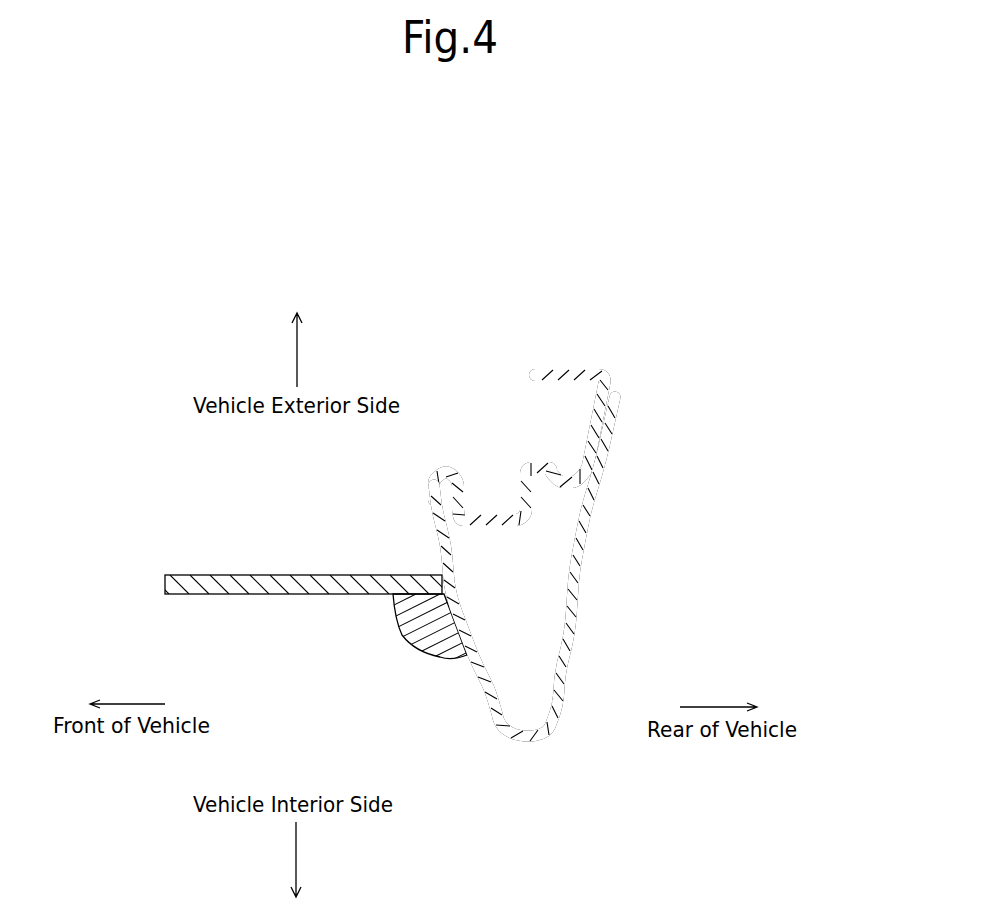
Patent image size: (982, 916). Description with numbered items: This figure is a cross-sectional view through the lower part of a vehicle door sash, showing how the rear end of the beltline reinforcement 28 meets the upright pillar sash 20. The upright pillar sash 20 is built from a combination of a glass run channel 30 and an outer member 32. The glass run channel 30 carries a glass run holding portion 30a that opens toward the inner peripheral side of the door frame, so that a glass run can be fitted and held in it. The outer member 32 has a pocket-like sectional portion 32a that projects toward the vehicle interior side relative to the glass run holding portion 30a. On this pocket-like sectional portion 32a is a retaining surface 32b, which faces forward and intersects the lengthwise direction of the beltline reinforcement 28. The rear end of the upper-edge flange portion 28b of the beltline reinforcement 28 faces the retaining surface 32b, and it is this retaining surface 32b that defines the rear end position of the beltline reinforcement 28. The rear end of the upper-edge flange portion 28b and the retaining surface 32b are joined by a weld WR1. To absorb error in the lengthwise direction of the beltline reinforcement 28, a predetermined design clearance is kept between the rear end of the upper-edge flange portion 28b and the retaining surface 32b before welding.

The upright pillar sash 20 is at (561, 516).
The beltline reinforcement 28 is at (299, 571).
The upper-edge flange portion 28b is at (232, 595).
The glass run channel 30 is at (518, 392).
The glass run holding portion 30a is at (543, 418).
The outer member 32 is at (556, 585).
The pocket-like sectional portion 32a is at (573, 632).
The retaining surface 32b is at (472, 668).
The weld WR1 is at (420, 642).